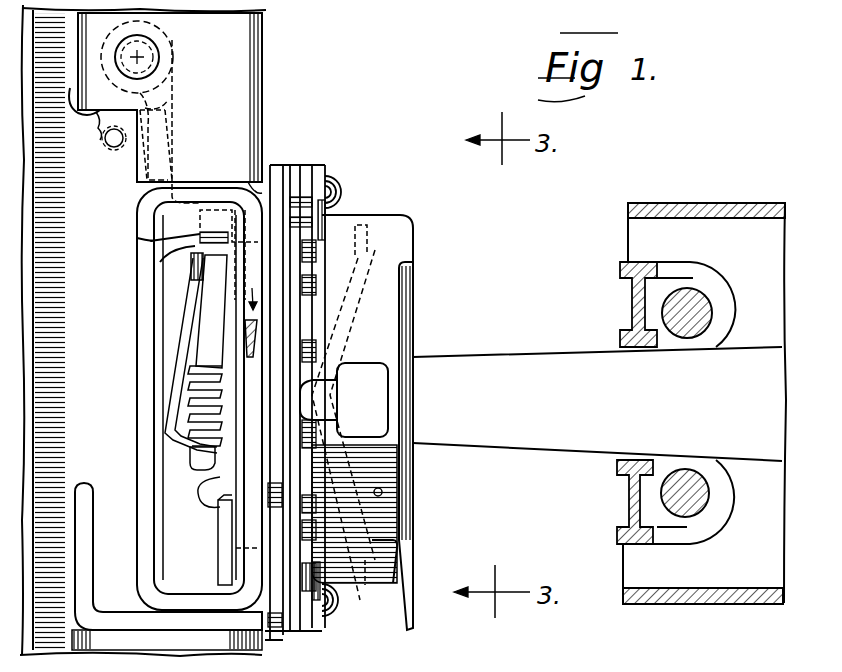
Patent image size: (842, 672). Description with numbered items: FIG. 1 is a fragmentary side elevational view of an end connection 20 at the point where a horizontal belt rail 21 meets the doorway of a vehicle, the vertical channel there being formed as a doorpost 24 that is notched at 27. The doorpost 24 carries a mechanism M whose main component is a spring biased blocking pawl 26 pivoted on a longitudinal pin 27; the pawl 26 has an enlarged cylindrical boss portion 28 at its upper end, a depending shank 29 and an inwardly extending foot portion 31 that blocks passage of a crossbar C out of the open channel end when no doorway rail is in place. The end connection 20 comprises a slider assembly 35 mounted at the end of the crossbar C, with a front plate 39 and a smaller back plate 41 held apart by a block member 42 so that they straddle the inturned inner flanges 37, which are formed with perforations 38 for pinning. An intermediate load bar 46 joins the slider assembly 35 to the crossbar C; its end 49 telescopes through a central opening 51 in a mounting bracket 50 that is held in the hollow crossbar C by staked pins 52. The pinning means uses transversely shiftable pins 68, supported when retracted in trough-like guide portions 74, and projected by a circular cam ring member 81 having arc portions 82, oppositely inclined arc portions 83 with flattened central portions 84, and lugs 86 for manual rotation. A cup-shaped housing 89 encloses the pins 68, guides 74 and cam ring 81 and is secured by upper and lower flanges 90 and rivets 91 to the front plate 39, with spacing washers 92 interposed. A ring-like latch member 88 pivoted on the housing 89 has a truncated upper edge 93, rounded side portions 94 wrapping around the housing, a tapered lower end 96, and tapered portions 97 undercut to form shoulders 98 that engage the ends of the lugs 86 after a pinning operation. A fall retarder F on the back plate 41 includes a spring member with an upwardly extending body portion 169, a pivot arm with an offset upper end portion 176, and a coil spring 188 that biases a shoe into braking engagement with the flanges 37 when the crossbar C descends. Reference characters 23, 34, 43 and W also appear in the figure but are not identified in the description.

The end connection 20 is at (392, 168).
The horizontal belt rail 21 is at (135, 366).
The frame base bracket 23 is at (140, 402).
The doorpost 24 is at (267, 103).
The blocking pawl 26 is at (173, 97).
The longitudinal pin 27 is at (150, 58).
The cylindrical boss portion 28 is at (170, 33).
The shank 29 is at (199, 127).
The foot portion 31 is at (150, 255).
The link 34 is at (100, 296).
The slider assembly 35 is at (325, 150).
The inner flanges 37 is at (200, 517).
The perforations 38 is at (258, 293).
The front plate 39 is at (273, 632).
The back plate 41 is at (230, 552).
The block member 42 is at (250, 455).
The pin block 43 is at (181, 268).
The load bar 46 is at (503, 352).
The load bar end portion 49 is at (784, 399).
The mounting bracket 50 is at (733, 318).
The central opening 51 is at (630, 348).
The pins 52 is at (700, 305).
The transversely shiftable pins 68 is at (312, 258).
The trough-like guide portions 74 is at (318, 292).
The cam ring member 81 is at (352, 488).
The arc portions 82 is at (370, 235).
The inclined arc portions 83 is at (347, 310).
The flattened central portion 84 is at (290, 393).
The lugs 86 is at (363, 372).
The ring-like latch member 88 is at (415, 477).
The cup-shaped housing 89 is at (340, 217).
The upper and lower flanges 90 is at (322, 167).
The rivets 91 is at (327, 187).
The spacing washers 92 is at (310, 173).
The truncated upper edge portion 93 is at (417, 257).
The rounded side portions 94 is at (418, 333).
The tapered lower end 96 is at (413, 613).
The tapered portions 97 is at (382, 494).
The shoulders 98 is at (382, 550).
The body portion 169 is at (180, 320).
The offset upper end portion 176 is at (195, 275).
The coil spring 188 is at (193, 382).
The mechanism M is at (122, 172).
The spring W is at (95, 132).
The fall retarder F is at (170, 448).
The crossbar C is at (688, 203).